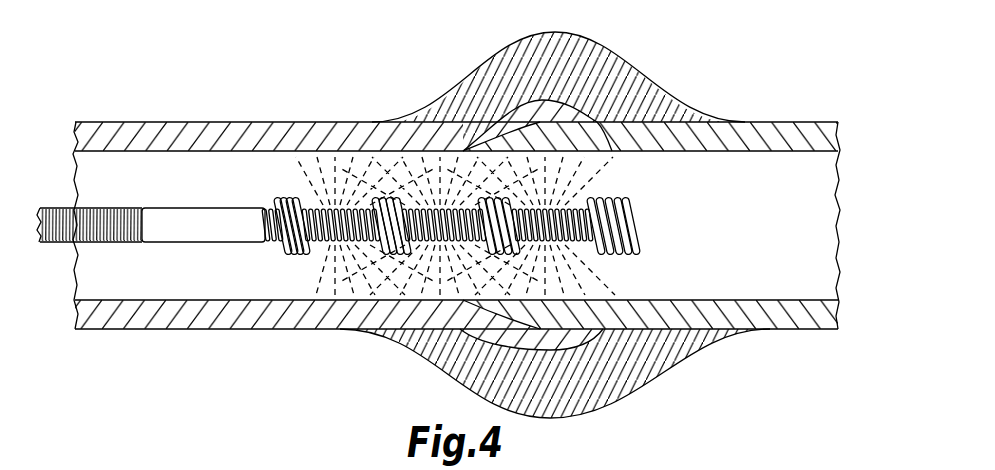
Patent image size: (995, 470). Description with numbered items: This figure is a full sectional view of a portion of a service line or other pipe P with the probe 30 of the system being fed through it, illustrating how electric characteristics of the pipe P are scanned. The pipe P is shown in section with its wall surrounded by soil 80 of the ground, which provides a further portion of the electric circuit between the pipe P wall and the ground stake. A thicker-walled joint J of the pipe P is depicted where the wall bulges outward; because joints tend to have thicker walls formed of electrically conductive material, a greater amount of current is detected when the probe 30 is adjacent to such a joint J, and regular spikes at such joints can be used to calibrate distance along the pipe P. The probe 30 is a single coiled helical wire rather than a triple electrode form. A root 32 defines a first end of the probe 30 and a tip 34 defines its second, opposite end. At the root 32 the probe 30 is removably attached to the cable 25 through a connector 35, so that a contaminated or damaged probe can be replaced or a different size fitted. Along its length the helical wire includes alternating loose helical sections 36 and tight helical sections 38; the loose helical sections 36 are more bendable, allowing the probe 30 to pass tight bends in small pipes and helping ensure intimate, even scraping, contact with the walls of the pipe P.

The pipe P is at (150, 130).
The joint J is at (548, 419).
The soil 80 is at (605, 138).
The probe 30 is at (371, 168).
The cable 25 is at (97, 210).
The connector 35 is at (220, 208).
The root 32 is at (266, 244).
The tip 34 is at (634, 226).
The loose helical sections 36 is at (287, 256).
The tight helical sections 38 is at (345, 248).